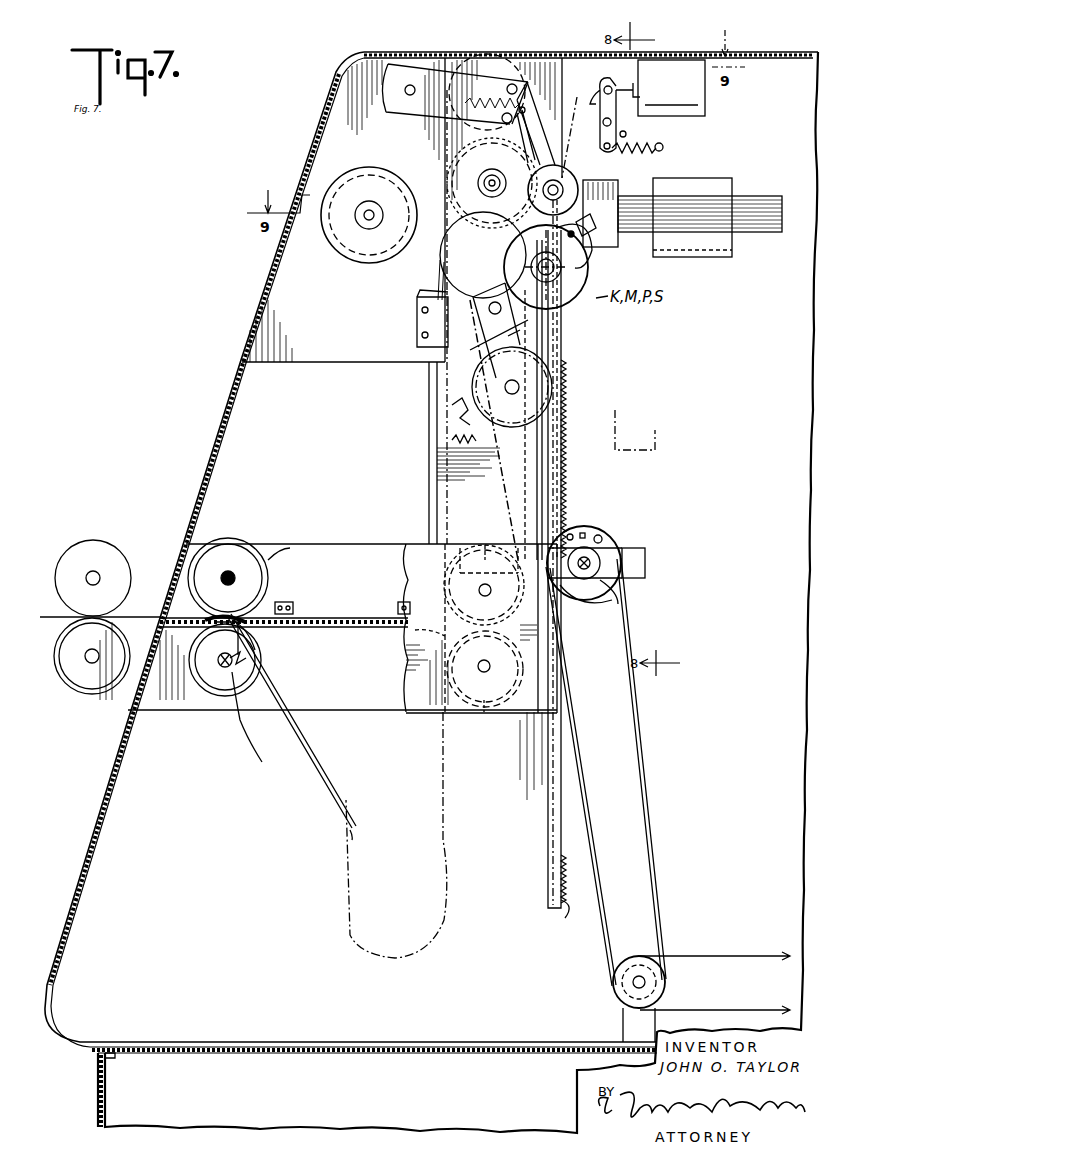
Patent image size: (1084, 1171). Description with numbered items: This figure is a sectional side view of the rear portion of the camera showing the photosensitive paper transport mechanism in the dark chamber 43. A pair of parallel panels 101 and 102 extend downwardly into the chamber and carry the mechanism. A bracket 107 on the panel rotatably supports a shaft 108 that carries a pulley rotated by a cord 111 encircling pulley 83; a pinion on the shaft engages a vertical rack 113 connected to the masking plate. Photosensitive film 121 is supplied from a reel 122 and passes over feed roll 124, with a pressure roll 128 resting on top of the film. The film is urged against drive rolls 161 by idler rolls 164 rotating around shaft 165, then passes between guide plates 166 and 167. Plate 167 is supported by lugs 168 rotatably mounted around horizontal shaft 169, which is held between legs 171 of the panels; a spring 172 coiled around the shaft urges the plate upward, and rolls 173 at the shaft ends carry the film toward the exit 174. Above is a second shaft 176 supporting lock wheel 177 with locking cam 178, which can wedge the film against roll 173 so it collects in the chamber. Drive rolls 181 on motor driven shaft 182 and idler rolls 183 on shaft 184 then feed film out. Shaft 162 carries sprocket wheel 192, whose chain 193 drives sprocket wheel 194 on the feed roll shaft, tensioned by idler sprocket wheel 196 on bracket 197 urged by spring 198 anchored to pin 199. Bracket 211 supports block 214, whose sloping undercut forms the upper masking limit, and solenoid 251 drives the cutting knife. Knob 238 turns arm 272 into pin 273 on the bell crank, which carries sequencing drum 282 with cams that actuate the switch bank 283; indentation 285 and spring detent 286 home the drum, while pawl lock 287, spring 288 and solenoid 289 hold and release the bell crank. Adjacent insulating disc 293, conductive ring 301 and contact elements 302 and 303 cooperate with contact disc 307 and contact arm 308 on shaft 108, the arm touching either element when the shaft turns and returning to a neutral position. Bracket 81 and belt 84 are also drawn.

The dark chamber 43 is at (338, 1003).
The bracket 81 is at (622, 1020).
The pulley 83 is at (612, 992).
The tape 84 is at (728, 950).
The panel 101 is at (548, 60).
The panel 102 is at (344, 340).
The bracket 107 is at (645, 563).
The shaft 108 is at (590, 590).
The cord 111 is at (642, 742).
The vertical rack 113 is at (570, 394).
The photosensitive film 121 is at (470, 156).
The reel 122 is at (343, 256).
The feed roll 124 is at (483, 255).
The pressure roll 128 is at (490, 70).
The drive rolls 161 is at (487, 548).
The shaft 162 is at (484, 585).
The idler rolls 164 is at (474, 726).
The shaft 165 is at (485, 669).
The guide plate 166 is at (308, 612).
The guide plate 167 is at (352, 632).
The lug 168 is at (250, 640).
The horizontal shaft 169 is at (246, 660).
The leg 171 is at (420, 710).
The spring 172 is at (232, 698).
The roll 173 is at (210, 690).
The exit 174 is at (165, 622).
The second shaft 176 is at (232, 572).
The lock wheel 177 is at (205, 548).
The locking cam 178 is at (290, 555).
The drive rolls 181 is at (96, 680).
The motor driven shaft 182 is at (90, 662).
The idler rolls 183 is at (80, 548).
The shaft 184 is at (100, 575).
The sprocket wheel 192 is at (452, 578).
The chain 193 is at (500, 500).
The sprocket wheel 194 is at (460, 172).
The idler sprocket wheel 196 is at (550, 370).
The bracket 197 is at (520, 336).
The spring 198 is at (452, 412).
The pin 199 is at (452, 440).
The bracket 211 is at (622, 182).
The block 214 is at (540, 123).
The knob 238 is at (575, 180).
The solenoid 251 is at (690, 176).
The arm 272 is at (515, 130).
The pin 273 is at (576, 137).
The sequencing drum 282 is at (590, 276).
The bank of control switches 283 is at (416, 318).
The indentation 285 is at (592, 244).
The spring detent 286 is at (588, 214).
The pawl lock 287 is at (608, 86).
The spring 288 is at (640, 146).
The solenoid 289 is at (672, 72).
The insulating disc 293 is at (622, 602).
The electrically conductive ring 301 is at (620, 592).
The contact element 302 is at (572, 534).
The contacting element 303 is at (604, 538).
The contact disc 307 is at (600, 562).
The contact arm 308 is at (586, 534).